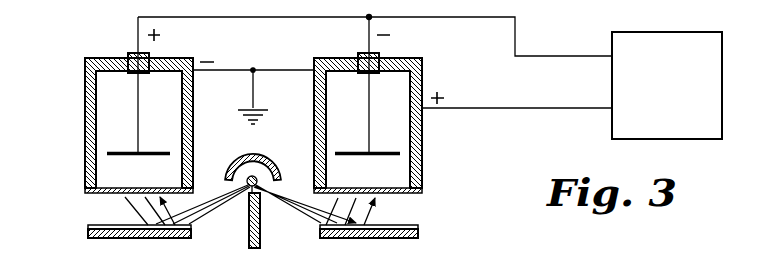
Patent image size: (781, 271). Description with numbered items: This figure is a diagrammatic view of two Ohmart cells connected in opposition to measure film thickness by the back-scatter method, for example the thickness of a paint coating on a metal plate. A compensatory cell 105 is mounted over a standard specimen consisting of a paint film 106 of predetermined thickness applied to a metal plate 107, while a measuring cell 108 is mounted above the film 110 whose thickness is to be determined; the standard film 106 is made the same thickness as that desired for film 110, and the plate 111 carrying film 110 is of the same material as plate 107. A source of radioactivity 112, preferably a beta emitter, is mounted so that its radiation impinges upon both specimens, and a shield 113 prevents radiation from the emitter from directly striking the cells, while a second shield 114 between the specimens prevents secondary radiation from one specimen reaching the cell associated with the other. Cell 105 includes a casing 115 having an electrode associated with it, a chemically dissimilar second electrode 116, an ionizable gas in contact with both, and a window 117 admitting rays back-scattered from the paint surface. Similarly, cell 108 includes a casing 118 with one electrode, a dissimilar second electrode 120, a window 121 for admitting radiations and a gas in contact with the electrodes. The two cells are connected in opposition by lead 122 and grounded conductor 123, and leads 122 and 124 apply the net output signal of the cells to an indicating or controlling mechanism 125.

The compensatory cell 105 is at (427, 157).
The paint film 106 is at (418, 226).
The metal plate 107 is at (418, 236).
The measuring cell 108 is at (83, 118).
The film 110 is at (88, 227).
The plate 111 is at (100, 239).
The source of radioactivity 112 is at (248, 192).
The shield 113 is at (265, 158).
The second shield 114 is at (262, 242).
The casing 115 is at (423, 125).
The second electrode 116 is at (384, 150).
The window 117 is at (423, 191).
The casing 118 is at (85, 74).
The second electrode 120 is at (152, 150).
The window 121 is at (90, 195).
The lead 122 is at (138, 20).
The grounded conductor 123 is at (280, 69).
The lead 124 is at (545, 108).
The indicating or controlling mechanism 125 is at (725, 76).